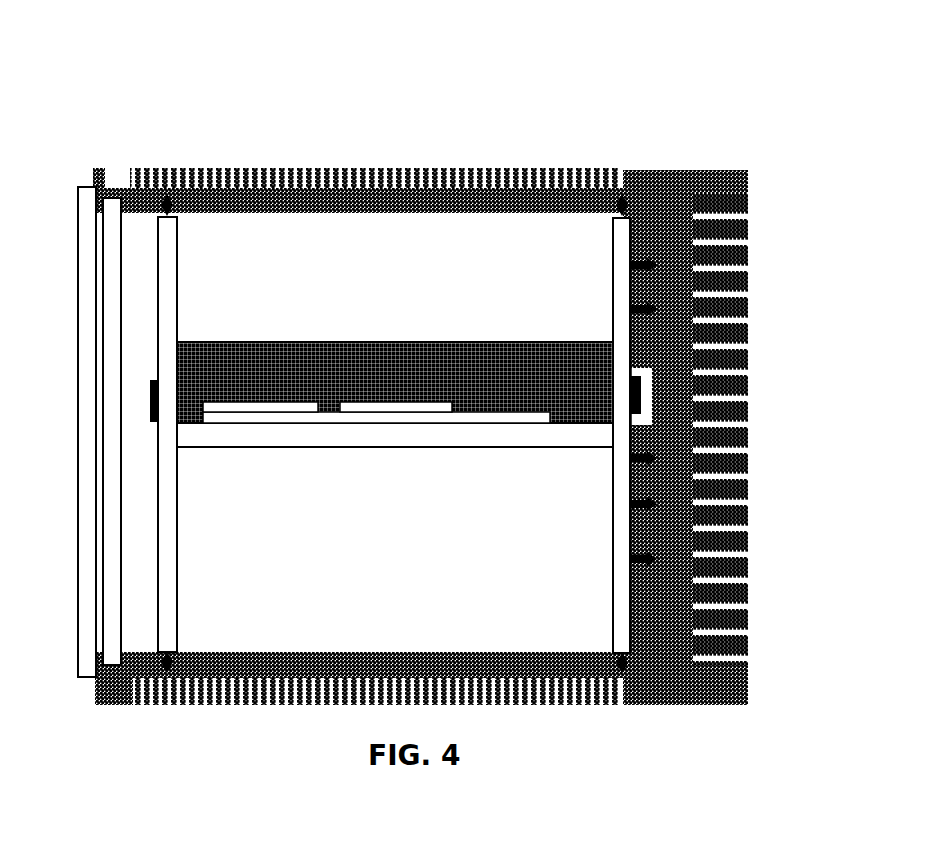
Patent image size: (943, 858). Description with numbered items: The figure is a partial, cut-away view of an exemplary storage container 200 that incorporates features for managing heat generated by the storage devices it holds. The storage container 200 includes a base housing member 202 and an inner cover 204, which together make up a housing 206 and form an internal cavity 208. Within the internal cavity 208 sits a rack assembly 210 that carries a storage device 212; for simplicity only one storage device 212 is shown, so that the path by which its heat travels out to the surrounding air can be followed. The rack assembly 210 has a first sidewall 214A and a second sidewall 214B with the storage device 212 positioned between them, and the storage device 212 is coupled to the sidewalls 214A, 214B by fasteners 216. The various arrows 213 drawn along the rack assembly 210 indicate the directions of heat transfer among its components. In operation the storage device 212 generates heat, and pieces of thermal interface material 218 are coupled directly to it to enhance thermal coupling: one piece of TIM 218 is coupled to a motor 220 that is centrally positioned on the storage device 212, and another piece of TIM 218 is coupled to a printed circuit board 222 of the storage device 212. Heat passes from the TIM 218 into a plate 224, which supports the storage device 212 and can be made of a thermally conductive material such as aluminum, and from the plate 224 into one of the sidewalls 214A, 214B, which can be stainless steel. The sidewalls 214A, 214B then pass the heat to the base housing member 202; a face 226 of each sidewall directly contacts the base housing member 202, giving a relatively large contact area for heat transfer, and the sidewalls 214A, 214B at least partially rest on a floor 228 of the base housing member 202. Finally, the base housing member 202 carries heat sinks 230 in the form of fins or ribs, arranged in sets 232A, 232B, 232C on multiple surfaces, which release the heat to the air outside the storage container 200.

The storage container 200 is at (657, 135).
The base housing member 202 is at (103, 170).
The inner cover 204 is at (108, 197).
The housing 206 is at (117, 113).
The internal cavity 208 is at (392, 263).
The rack assembly 210 is at (451, 254).
The storage device 212 is at (540, 355).
The arrows 213 is at (180, 645).
The first sidewall 214A is at (178, 253).
The second sidewall 214B is at (613, 520).
The fasteners 216 is at (150, 402).
The thermal interface material 218 is at (275, 425).
The motor 220 is at (373, 404).
The printed circuit board 222 is at (305, 406).
The plate 224 is at (492, 435).
The face 226 is at (635, 616).
The floor 228 is at (396, 655).
The heat sinks 230 is at (320, 170).
The set of heat sinks 232A is at (338, 127).
The set of heat sinks 232B is at (770, 230).
The set of heat sinks 232C is at (456, 712).